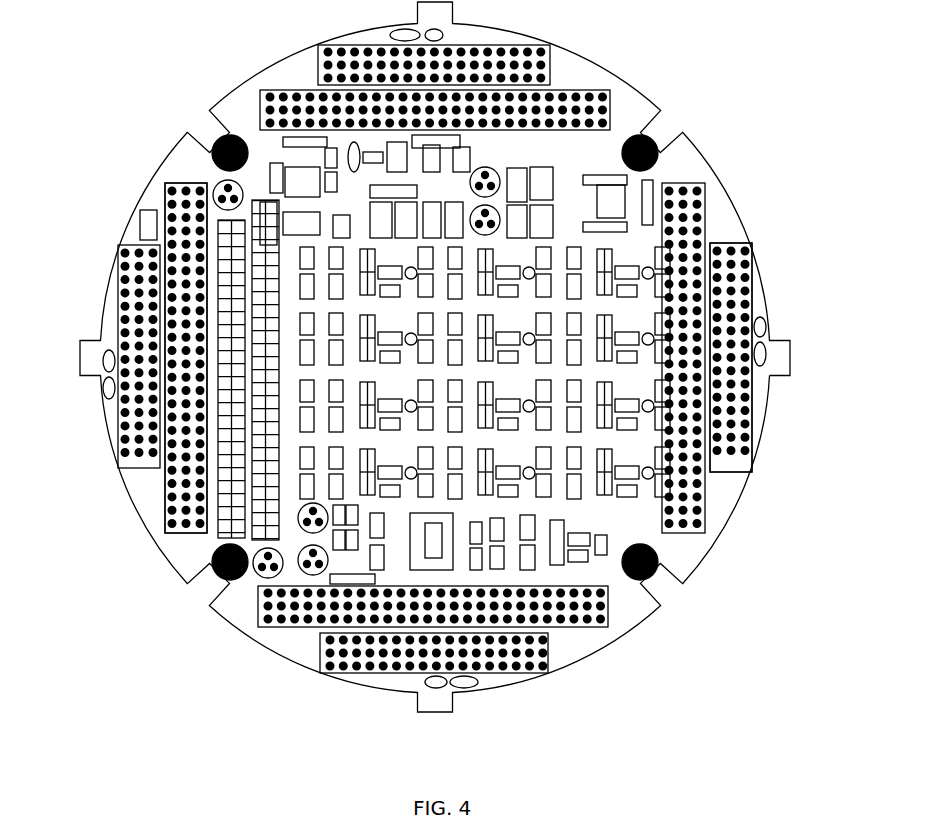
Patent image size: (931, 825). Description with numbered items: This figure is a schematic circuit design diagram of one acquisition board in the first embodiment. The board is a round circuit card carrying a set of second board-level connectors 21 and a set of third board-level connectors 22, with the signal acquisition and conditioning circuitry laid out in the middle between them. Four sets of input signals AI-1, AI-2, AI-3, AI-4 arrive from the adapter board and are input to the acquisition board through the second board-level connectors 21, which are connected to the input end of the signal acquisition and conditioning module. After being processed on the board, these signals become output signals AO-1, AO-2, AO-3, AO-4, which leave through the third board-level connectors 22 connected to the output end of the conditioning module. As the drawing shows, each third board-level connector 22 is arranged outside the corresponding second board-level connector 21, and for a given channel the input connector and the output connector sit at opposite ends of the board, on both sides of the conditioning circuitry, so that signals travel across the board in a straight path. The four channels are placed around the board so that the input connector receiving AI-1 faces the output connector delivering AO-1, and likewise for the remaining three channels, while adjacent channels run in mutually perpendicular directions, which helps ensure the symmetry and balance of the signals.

The output signal AO-1 is at (735, 467).
The output signal AO-2 is at (513, 68).
The output signal AO-3 is at (118, 308).
The output signal AO-4 is at (347, 653).
The input signal AI-1 is at (183, 518).
The input signal AI-2 is at (603, 627).
The input signal AI-3 is at (687, 212).
The input signal AI-4 is at (258, 113).
The second board-level connector 21 is at (165, 507).
The third board-level connector 22 is at (740, 320).